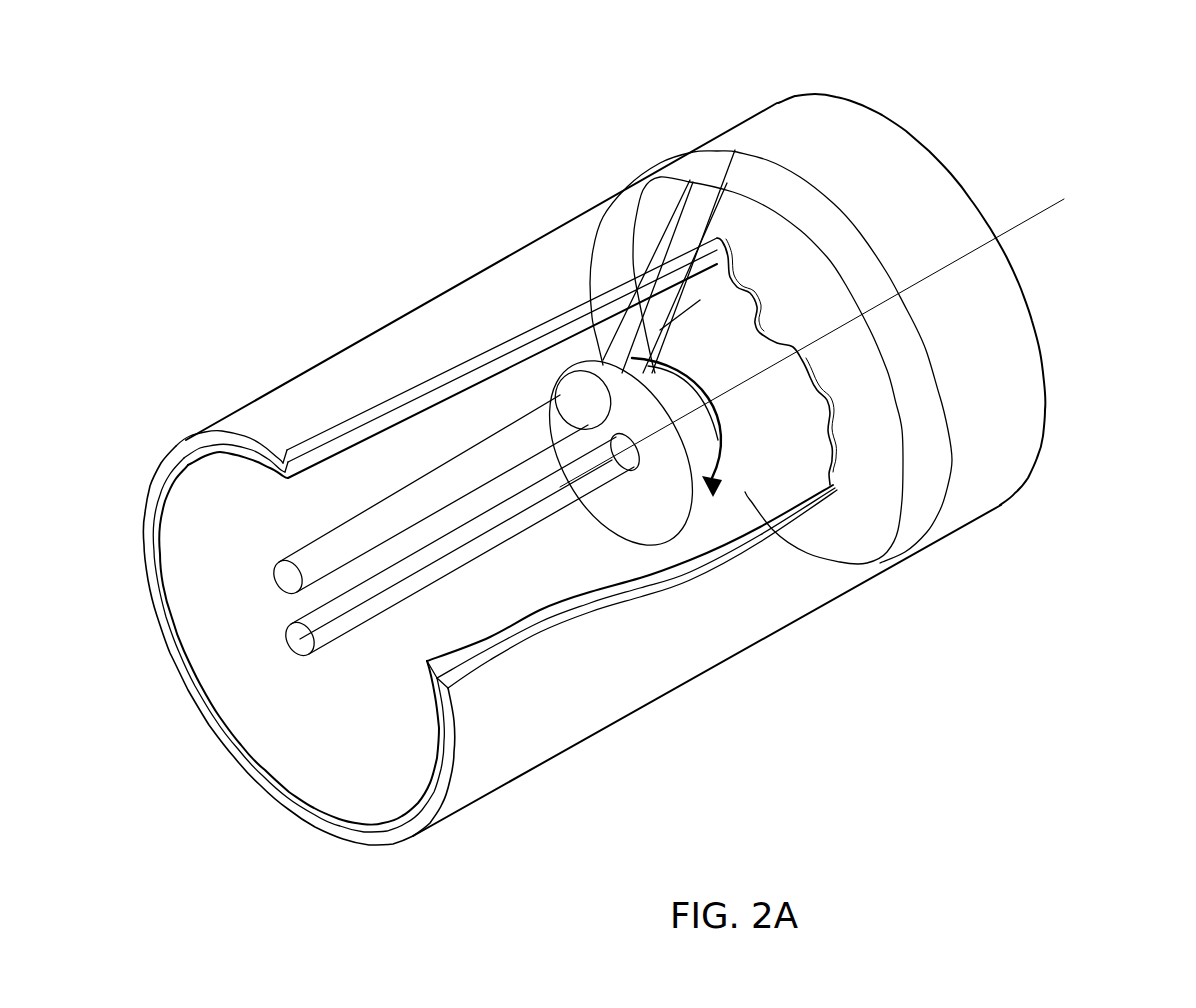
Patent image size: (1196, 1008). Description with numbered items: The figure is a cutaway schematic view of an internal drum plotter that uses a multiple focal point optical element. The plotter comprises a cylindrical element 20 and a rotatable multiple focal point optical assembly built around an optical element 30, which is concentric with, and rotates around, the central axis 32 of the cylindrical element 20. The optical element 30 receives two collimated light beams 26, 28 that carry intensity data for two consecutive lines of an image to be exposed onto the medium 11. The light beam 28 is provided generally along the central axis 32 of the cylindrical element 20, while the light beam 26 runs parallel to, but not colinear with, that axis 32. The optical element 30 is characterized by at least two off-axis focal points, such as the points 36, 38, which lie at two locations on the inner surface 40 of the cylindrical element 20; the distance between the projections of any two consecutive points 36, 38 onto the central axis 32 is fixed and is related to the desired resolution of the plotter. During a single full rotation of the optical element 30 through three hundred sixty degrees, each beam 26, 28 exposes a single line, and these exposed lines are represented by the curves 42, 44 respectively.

The medium 11 is at (340, 453).
The cylindrical element 20 is at (1020, 326).
The light beam 26 is at (470, 463).
The light beam 28 is at (510, 530).
The optical element 30 is at (658, 508).
The central axis 32 is at (1064, 199).
The focal point 36 is at (690, 180).
The focal point 38 is at (735, 150).
The inner surface 40 is at (186, 460).
The curve 42 is at (902, 499).
The curve 44 is at (948, 472).